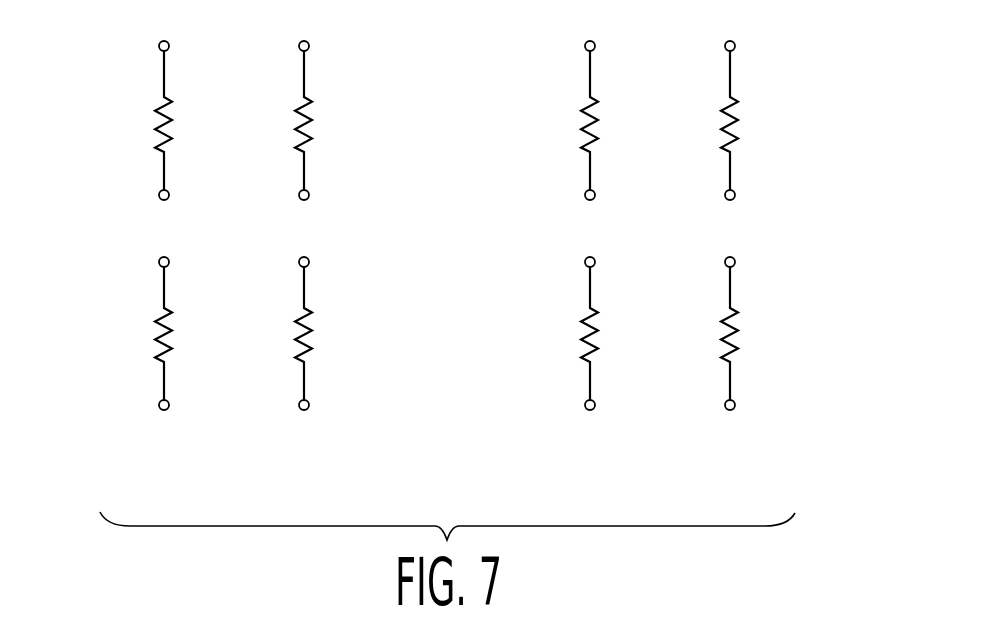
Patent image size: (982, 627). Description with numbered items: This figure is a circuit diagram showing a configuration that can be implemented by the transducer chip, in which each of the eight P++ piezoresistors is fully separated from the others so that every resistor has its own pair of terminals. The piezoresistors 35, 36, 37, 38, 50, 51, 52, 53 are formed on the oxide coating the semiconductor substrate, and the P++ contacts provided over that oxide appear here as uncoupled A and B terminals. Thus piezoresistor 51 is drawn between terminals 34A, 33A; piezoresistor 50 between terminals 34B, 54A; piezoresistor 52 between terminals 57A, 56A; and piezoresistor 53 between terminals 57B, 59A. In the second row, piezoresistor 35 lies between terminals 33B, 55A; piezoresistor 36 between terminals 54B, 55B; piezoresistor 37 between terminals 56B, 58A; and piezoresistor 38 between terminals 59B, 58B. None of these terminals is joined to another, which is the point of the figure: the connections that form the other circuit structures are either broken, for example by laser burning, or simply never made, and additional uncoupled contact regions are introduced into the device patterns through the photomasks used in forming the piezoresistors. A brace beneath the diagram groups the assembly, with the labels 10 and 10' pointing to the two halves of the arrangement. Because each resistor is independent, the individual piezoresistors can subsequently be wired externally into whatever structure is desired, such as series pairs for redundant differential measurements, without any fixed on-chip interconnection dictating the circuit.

The sensor 10 is at (236, 263).
The sensor 10' is at (662, 263).
The P++ contact 33A is at (158, 195).
The P++ contact 33B is at (158, 263).
The P++ contact 34A is at (158, 46).
The P++ contact 34B is at (309, 45).
The piezoresistor 35 is at (156, 334).
The piezoresistor 36 is at (312, 336).
The piezoresistor 37 is at (582, 330).
The piezoresistor 38 is at (739, 333).
The piezoresistor 50 is at (312, 122).
The piezoresistor 51 is at (156, 138).
The piezoresistor 52 is at (582, 120).
The piezoresistor 53 is at (739, 113).
The P++ contact 54A is at (309, 196).
The P++ contact 54B is at (309, 262).
The P++ contact 55A is at (158, 406).
The P++ contact 55B is at (309, 405).
The P++ contact 56A is at (585, 195).
The P++ contact 56B is at (585, 262).
The P++ contact 57A is at (585, 46).
The P++ contact 57B is at (735, 45).
The P++ contact 58A is at (585, 405).
The P++ contact 58B is at (735, 405).
The P++ contact 59A is at (735, 195).
The P++ contact 59B is at (735, 262).